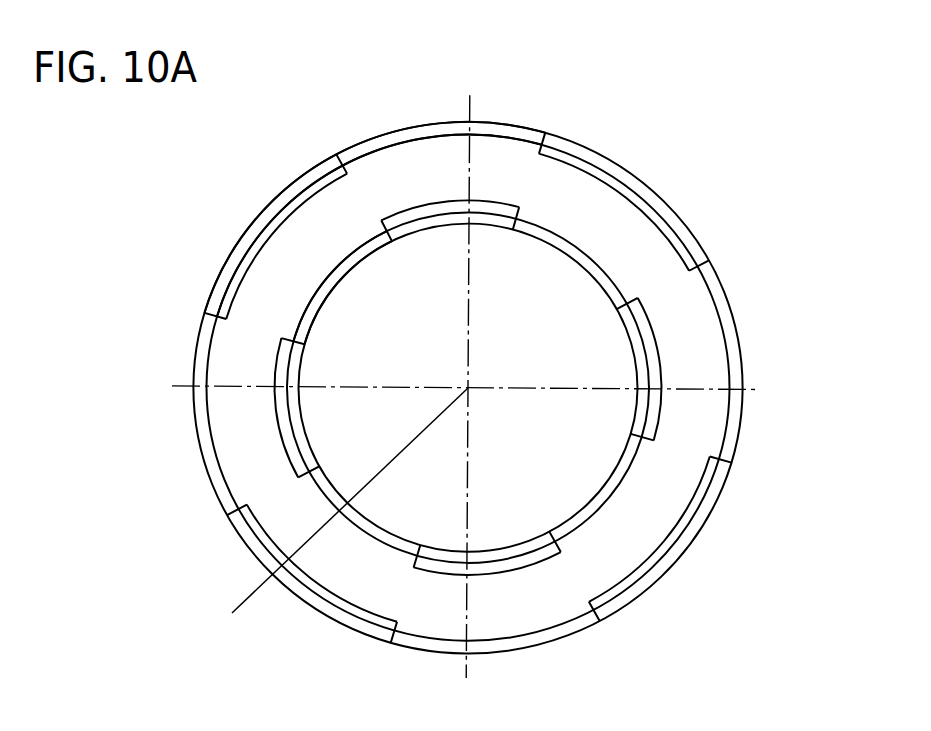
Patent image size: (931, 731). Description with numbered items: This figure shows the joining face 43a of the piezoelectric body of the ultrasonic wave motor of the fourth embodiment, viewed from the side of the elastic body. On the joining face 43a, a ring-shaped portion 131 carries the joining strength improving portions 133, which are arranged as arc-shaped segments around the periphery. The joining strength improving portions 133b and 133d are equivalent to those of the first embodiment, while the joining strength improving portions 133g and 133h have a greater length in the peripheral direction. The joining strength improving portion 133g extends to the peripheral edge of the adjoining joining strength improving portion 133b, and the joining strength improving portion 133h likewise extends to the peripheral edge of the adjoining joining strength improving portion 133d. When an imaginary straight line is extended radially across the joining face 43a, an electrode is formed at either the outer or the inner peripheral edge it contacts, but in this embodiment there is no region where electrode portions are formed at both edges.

The joining face 43a is at (688, 132).
The annular base ring 131 is at (702, 295).
The joining strength improving portion 133 is at (205, 104).
The joining strength improving portion 133h is at (411, 133).
The joining strength improving portion 133d is at (268, 233).
The joining strength improving portion 133b is at (387, 222).
The joining strength improving portion 133g is at (327, 282).